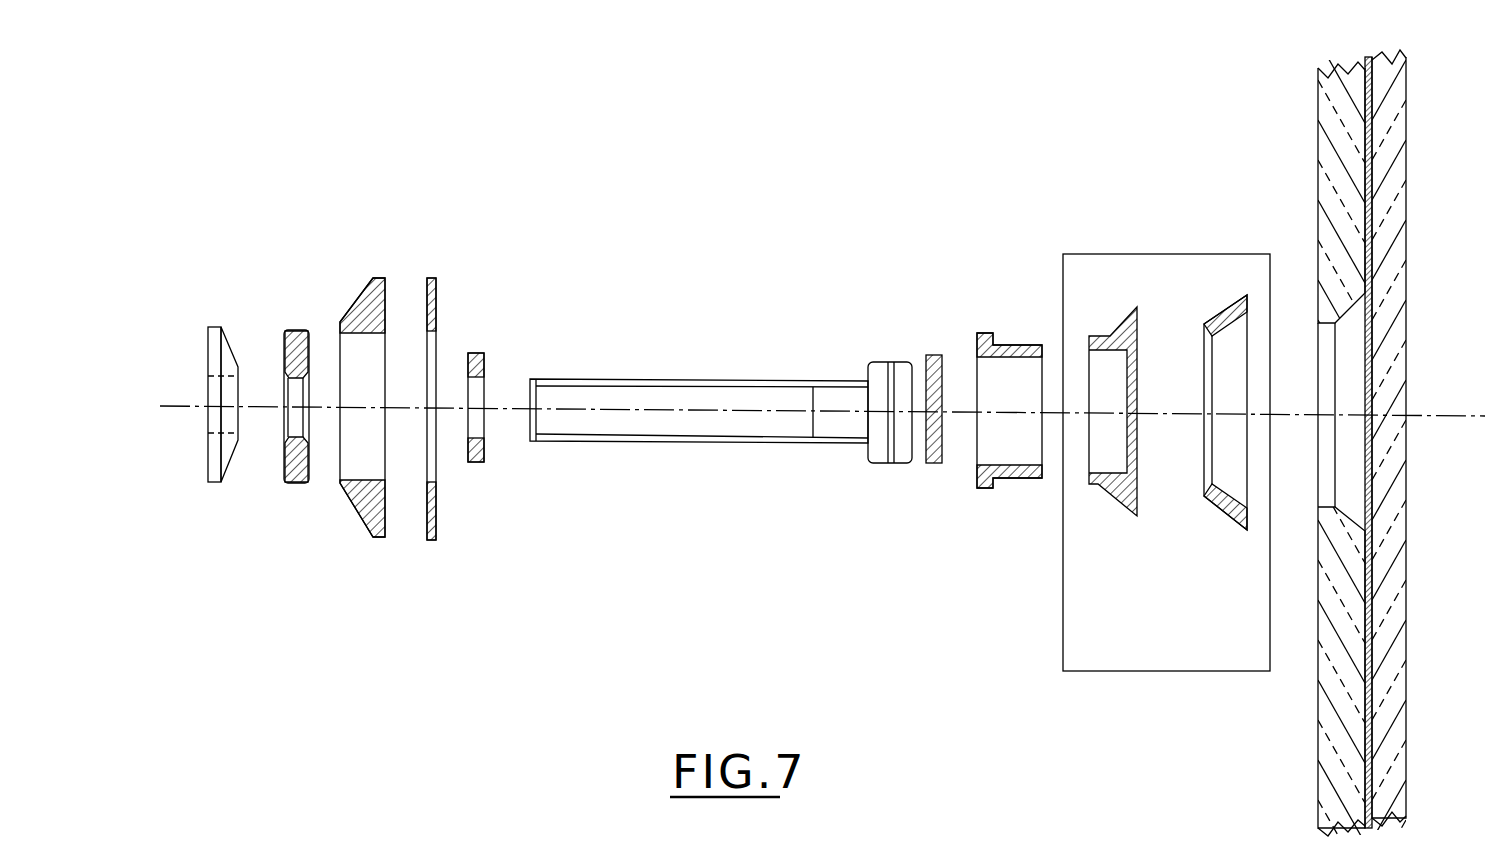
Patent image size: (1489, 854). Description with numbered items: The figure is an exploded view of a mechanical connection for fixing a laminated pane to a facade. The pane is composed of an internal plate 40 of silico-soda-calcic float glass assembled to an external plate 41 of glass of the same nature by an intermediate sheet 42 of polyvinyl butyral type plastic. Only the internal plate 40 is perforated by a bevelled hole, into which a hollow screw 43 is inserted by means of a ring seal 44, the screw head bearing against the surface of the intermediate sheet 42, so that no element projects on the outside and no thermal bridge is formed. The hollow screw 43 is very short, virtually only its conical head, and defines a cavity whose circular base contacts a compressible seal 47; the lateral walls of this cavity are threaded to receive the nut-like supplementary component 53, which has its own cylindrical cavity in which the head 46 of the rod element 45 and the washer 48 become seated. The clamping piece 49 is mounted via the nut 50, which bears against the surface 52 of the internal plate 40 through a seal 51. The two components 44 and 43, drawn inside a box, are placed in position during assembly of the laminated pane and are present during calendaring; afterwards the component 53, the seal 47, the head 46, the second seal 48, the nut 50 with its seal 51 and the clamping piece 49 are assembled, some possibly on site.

The internal plate 40 is at (1338, 127).
The external plate 41 is at (1388, 153).
The intermediate sheet 42 is at (1372, 103).
The hollow screw 43 is at (1122, 336).
The ring seal 44 is at (1228, 312).
The rod element 45 is at (697, 397).
The head 46 is at (878, 365).
The compressible seal 47 is at (935, 355).
The washer 48 is at (481, 353).
The clamping piece 49 is at (299, 331).
The nut 50 is at (383, 283).
The seal 51 is at (437, 290).
The surface 52 is at (1318, 224).
The supplementary component 53 is at (985, 333).